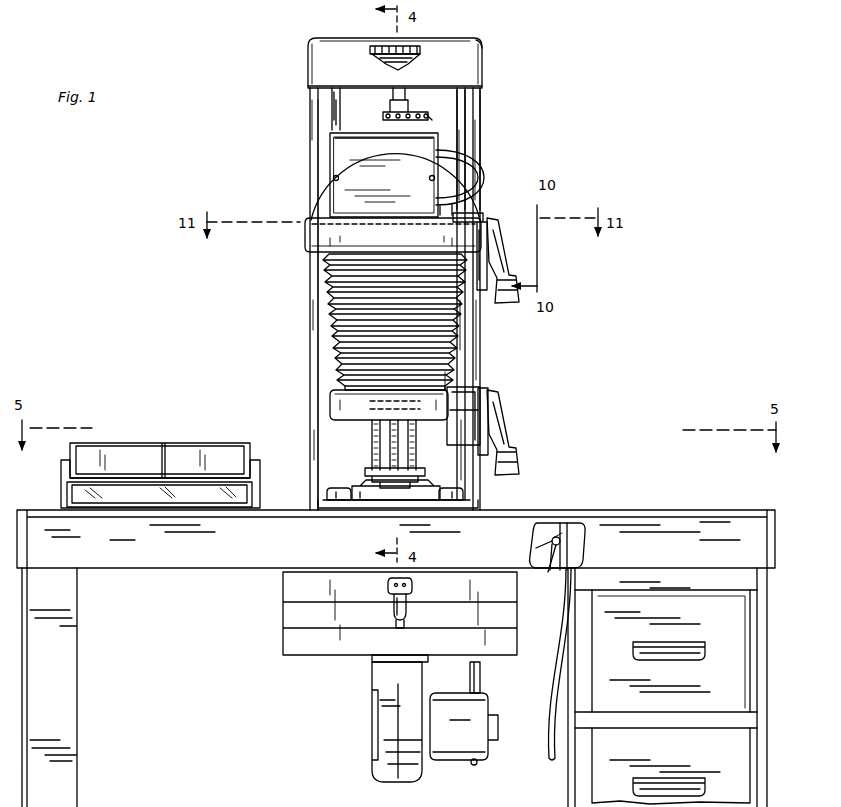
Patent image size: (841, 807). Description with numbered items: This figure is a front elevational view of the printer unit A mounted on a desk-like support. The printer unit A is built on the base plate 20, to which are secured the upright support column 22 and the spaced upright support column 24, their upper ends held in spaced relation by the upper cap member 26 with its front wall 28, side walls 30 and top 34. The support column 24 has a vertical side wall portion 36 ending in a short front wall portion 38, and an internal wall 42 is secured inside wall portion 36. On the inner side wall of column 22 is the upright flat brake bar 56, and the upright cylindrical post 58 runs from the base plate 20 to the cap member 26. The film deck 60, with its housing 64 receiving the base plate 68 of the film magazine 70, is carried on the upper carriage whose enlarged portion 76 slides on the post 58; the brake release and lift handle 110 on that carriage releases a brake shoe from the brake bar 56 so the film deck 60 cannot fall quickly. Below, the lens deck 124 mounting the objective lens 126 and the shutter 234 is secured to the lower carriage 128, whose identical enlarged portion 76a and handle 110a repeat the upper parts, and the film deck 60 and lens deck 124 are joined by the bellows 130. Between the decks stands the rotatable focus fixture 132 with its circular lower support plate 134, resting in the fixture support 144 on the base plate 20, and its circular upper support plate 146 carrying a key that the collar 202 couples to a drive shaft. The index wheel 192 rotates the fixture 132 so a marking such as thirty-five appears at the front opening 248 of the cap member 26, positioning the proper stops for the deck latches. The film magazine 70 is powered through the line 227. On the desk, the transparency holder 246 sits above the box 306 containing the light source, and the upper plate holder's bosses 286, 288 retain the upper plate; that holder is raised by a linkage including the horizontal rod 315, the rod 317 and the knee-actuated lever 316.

The base plate 20 is at (478, 510).
The upright support column 22 is at (458, 128).
The upright support column 24 is at (312, 108).
The upper cap member 26 is at (484, 50).
The front wall 28 is at (478, 76).
The side walls 30 is at (308, 64).
The top 34 is at (370, 40).
The vertical side wall portion 36 is at (310, 147).
The short front wall portion 38 is at (322, 286).
The internal wall 42 is at (338, 470).
The brake bar 56 is at (459, 112).
The upright cylindrical post 58 is at (482, 143).
The film deck 60 is at (362, 216).
The housing 64 is at (310, 238).
The base plate of the film magazine 68 is at (312, 226).
The film magazine 70 is at (318, 173).
The enlarged portion 76 is at (484, 210).
The enlarged portion of lower carriage 76a is at (485, 388).
The brake release and lift handle 110 is at (512, 276).
The brake release and lift handle of lower carriage 110a is at (512, 458).
The lens deck 124 is at (332, 408).
The objective lens 126 is at (330, 394).
The lower carriage 128 is at (446, 388).
The bellows 130 is at (340, 326).
The rotatable focus fixture 132 is at (372, 428).
The circular lower support plate 134 is at (418, 474).
The fixture support 144 is at (374, 484).
The circular upper support plate 146 is at (416, 120).
The index wheel 192 is at (421, 50).
The collar 202 is at (407, 106).
The line 227 is at (484, 178).
The shutter 234 is at (466, 408).
The transparency holder 246 is at (364, 496).
The front opening 248 is at (418, 60).
The boss 286 is at (452, 502).
The boss 288 is at (337, 502).
The box 306 is at (512, 592).
The horizontal rod 315 is at (560, 532).
The knee-actuated lever 316 is at (546, 724).
The rod 317 is at (553, 548).
The printer unit A is at (562, 512).